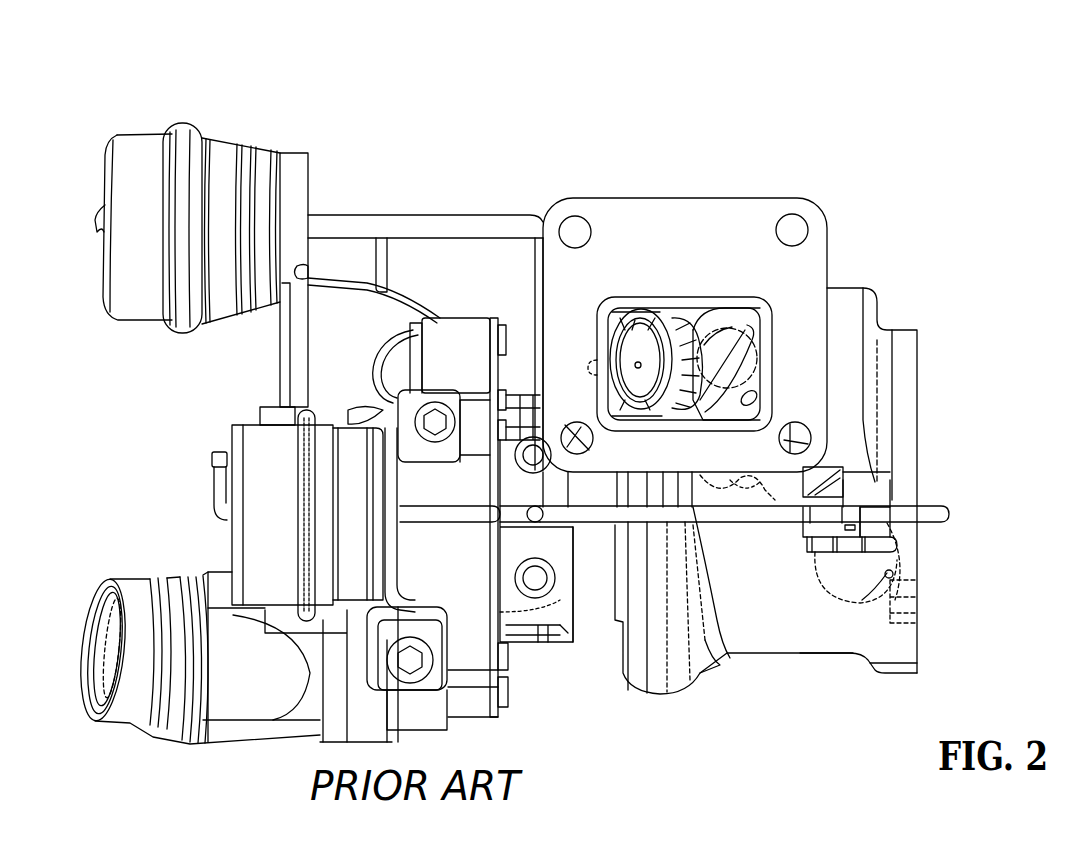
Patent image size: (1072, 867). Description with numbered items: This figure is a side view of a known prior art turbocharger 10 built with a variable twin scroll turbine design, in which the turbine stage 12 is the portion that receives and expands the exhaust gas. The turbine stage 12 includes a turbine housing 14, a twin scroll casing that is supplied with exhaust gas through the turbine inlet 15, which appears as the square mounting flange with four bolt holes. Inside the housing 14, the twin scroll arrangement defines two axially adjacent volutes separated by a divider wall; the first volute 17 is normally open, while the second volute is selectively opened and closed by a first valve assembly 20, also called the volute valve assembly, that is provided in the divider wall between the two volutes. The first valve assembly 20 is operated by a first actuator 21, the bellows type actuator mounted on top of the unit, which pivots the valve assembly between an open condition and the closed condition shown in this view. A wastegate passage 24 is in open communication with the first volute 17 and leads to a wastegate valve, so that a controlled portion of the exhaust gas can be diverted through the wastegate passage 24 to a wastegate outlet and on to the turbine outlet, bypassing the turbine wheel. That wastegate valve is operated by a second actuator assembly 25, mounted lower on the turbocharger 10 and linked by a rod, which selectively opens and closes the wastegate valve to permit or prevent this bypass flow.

The turbocharger 10 is at (984, 112).
The turbine stage 12 is at (779, 143).
The turbine housing 14 is at (636, 699).
The turbine inlet 15 is at (686, 310).
The first volute 17 is at (741, 315).
The first valve assembly 20 is at (637, 340).
The first actuator 21 is at (292, 142).
The wastegate passage 24 is at (744, 343).
The second actuator assembly 25 is at (263, 548).